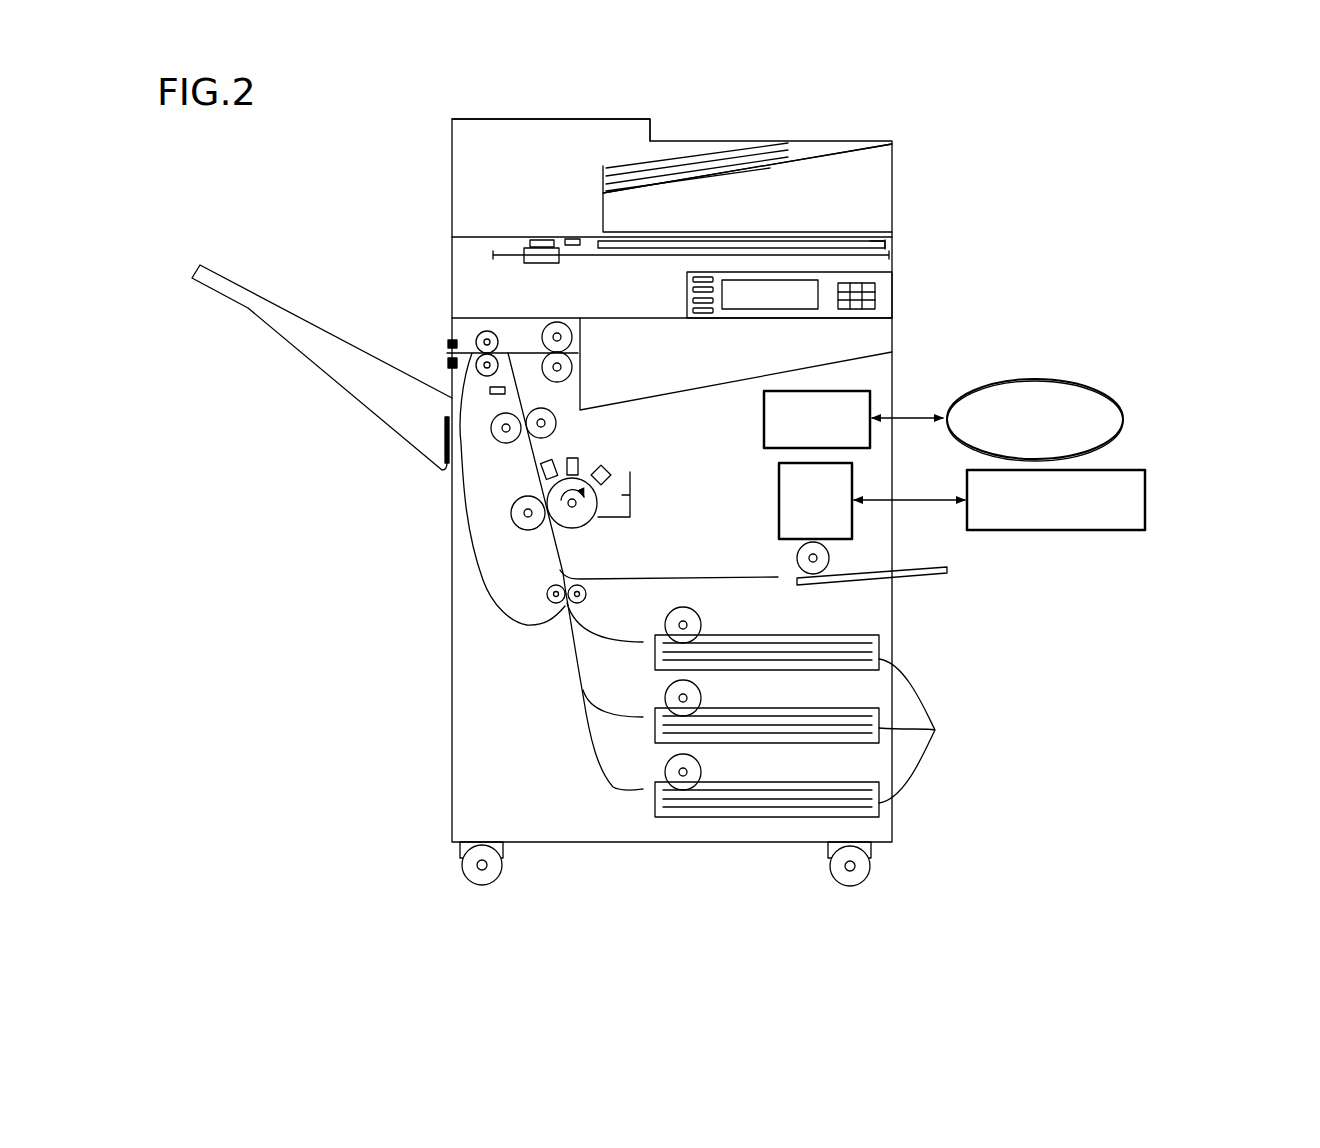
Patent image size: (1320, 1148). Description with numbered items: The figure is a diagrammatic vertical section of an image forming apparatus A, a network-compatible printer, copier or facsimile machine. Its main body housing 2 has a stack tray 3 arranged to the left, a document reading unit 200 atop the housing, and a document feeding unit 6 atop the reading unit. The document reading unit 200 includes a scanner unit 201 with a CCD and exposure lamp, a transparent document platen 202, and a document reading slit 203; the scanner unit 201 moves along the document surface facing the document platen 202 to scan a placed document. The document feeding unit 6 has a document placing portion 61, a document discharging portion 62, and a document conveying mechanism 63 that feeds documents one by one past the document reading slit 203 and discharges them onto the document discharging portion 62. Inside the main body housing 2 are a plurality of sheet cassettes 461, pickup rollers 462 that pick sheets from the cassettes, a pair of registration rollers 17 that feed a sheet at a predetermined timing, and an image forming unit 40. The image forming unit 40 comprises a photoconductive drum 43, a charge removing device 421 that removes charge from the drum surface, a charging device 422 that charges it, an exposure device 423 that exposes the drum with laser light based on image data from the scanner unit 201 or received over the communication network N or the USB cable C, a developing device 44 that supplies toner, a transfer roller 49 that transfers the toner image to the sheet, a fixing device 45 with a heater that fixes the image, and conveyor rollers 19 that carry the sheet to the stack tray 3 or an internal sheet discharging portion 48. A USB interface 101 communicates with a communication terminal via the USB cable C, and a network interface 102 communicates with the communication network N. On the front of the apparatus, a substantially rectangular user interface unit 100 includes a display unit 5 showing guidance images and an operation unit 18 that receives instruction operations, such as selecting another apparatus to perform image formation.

The image forming apparatus A is at (297, 126).
The main body housing 2 is at (871, 524).
The stack tray 3 is at (336, 389).
The display unit 5 is at (790, 292).
The document feeding unit 6 is at (707, 138).
The registration rollers 17 is at (567, 604).
The operation unit 18 is at (873, 295).
The conveyor rollers 19 is at (476, 338).
The image forming unit 40 is at (501, 497).
The photoconductive drum 43 is at (584, 526).
The developing device 44 is at (622, 495).
The fixing device 45 is at (514, 452).
The internal sheet discharging portion 48 is at (720, 385).
The transfer roller 49 is at (518, 527).
The document placing portion 61 is at (812, 147).
The document discharging portion 62 is at (827, 228).
The document conveying mechanism 63 is at (530, 192).
The user interface unit 100 is at (687, 289).
The USB interface 101 is at (779, 487).
The network interface 102 is at (785, 391).
The document reading unit 200 is at (476, 267).
The scanner unit 201 is at (541, 264).
The document platen 202 is at (880, 242).
The document reading slit 203 is at (540, 240).
The charge removing device 421 is at (552, 458).
The charging device 422 is at (579, 458).
The exposure device 423 is at (608, 470).
The sheet cassettes 461 is at (935, 730).
The pickup rollers 462 is at (701, 627).
The USB cable C is at (937, 503).
The communication network N is at (1057, 380).